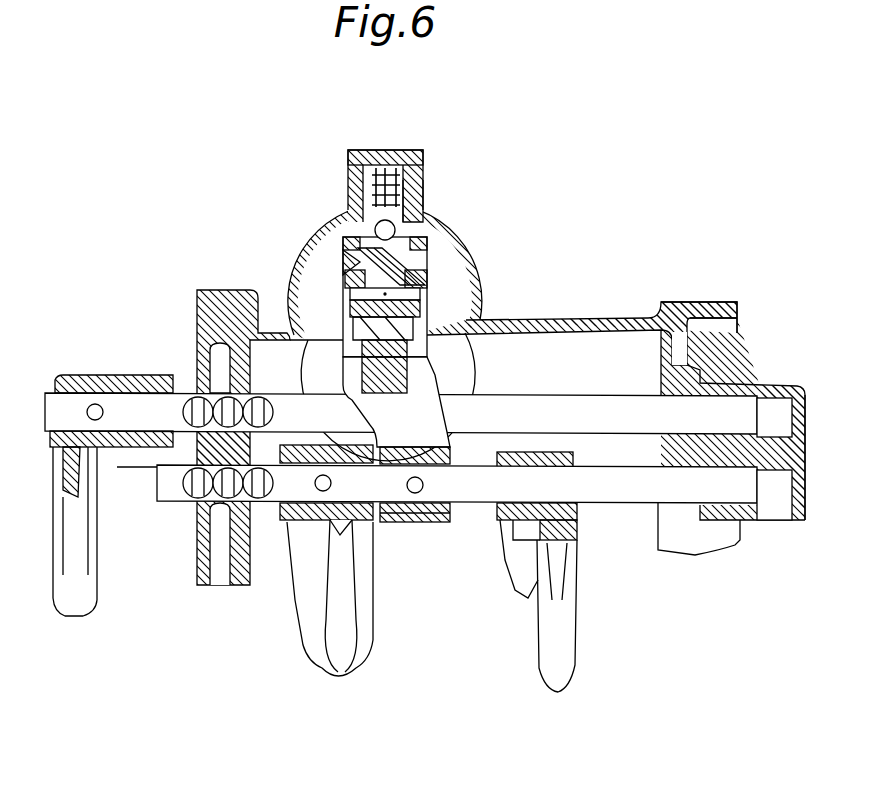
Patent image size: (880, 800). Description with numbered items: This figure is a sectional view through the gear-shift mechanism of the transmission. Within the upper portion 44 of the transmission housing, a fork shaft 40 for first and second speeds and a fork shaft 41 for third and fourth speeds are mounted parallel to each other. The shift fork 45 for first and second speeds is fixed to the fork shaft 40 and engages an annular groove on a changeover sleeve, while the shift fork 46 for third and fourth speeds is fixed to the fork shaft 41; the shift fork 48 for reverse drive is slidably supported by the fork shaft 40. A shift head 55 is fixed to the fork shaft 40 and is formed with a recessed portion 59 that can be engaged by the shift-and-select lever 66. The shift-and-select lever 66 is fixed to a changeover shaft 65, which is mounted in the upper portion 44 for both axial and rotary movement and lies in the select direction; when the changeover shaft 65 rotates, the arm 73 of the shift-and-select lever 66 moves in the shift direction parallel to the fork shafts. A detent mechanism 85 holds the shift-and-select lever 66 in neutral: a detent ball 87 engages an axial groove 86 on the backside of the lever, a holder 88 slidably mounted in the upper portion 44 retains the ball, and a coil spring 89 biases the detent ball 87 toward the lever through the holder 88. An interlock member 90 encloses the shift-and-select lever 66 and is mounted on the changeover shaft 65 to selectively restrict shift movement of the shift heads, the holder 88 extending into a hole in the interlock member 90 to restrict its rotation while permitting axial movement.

The fork shaft 40 is at (632, 492).
The fork shaft 41 is at (130, 412).
The upper portion 44 is at (708, 300).
The shift fork 45 is at (338, 656).
The shift fork 46 is at (75, 605).
The shift fork 48 is at (559, 668).
The shift head 55 is at (430, 517).
The recessed portion 59 is at (365, 300).
The changeover shaft 65 is at (360, 280).
The shift-and-select lever 66 is at (408, 273).
The arm 73 is at (467, 320).
The detent mechanism 85 is at (386, 146).
The axial groove 86 is at (395, 253).
The detent ball 87 is at (394, 224).
The holder 88 is at (410, 207).
The coil spring 89 is at (402, 203).
The interlock member 90 is at (357, 233).